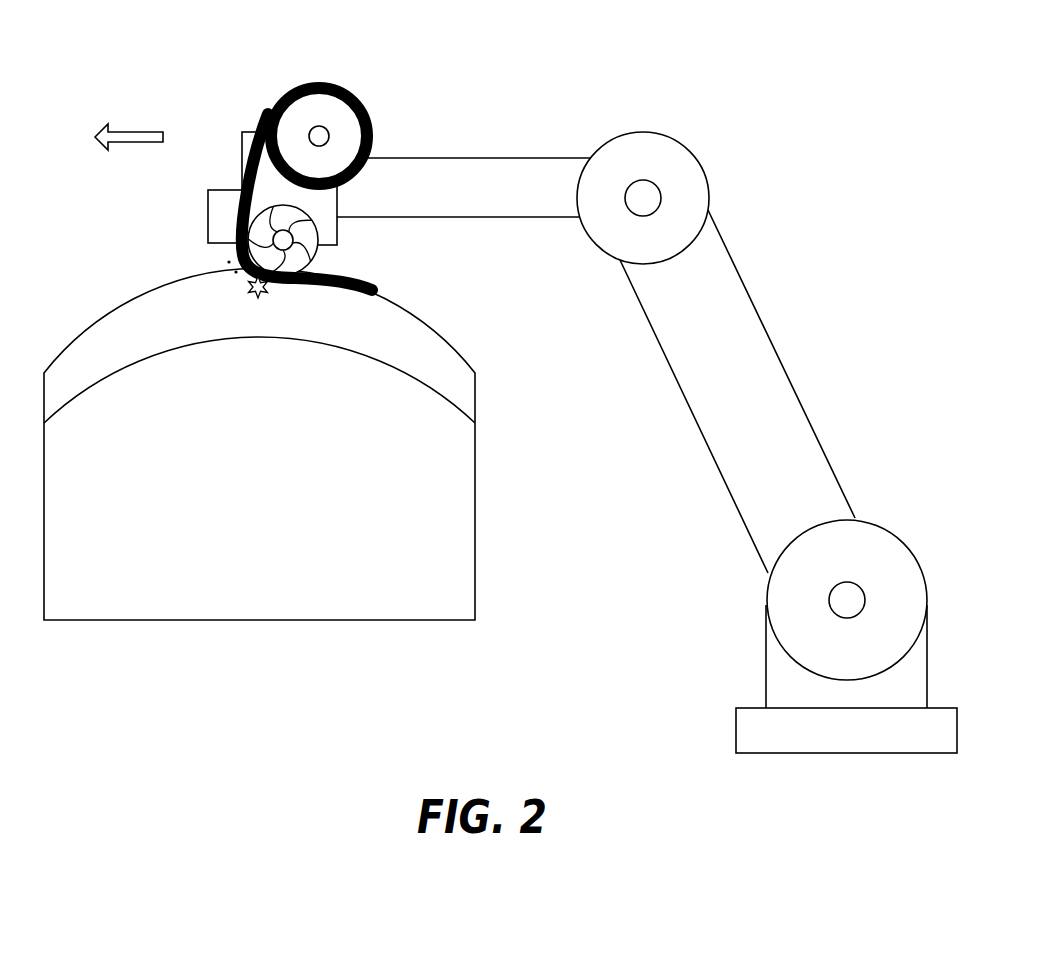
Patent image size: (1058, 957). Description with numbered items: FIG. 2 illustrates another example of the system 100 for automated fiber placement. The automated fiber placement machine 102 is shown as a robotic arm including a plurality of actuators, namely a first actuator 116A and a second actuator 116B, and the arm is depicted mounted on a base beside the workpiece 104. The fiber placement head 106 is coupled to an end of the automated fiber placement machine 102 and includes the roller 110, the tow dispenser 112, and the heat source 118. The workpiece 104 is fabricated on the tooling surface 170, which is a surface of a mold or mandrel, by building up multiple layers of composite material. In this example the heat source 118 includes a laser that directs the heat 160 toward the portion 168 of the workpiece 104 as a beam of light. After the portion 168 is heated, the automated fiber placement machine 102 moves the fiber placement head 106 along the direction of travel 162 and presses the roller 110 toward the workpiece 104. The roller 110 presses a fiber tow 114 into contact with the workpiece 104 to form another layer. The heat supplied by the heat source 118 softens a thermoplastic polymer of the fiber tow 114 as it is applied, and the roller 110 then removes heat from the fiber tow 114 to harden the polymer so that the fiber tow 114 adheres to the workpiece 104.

The system for automated fiber placement 100 is at (104, 32).
The automated fiber placement machine 102 is at (650, 442).
The workpiece 104 is at (458, 347).
The fiber placement head 106 is at (250, 132).
The roller 110 is at (320, 250).
The tow dispenser 112 is at (335, 113).
The fiber tow 114 is at (360, 295).
The first actuator 116A is at (878, 523).
The second actuator 116B is at (700, 158).
The heat source 118 is at (228, 190).
The heat 160 is at (240, 263).
The direction of travel 162 is at (118, 146).
The portion of the workpiece 168 is at (255, 297).
The tooling surface 170 is at (325, 345).